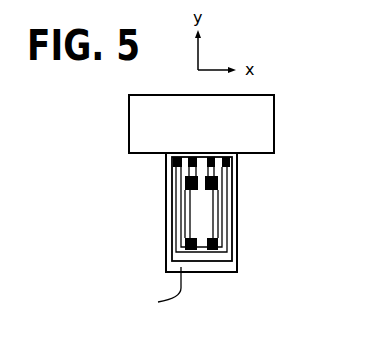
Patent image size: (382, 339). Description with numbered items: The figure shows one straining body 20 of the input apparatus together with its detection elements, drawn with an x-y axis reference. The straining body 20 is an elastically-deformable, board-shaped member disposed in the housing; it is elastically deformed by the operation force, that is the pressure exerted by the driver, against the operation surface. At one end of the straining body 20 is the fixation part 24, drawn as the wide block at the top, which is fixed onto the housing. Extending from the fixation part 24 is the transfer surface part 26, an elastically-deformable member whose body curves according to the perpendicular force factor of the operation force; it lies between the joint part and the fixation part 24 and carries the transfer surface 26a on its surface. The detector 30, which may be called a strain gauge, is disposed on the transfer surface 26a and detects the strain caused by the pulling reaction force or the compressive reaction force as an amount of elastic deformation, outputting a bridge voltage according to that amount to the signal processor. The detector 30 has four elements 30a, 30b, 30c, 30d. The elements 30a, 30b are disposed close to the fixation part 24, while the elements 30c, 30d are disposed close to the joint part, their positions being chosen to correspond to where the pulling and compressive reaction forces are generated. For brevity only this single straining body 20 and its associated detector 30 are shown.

The straining body 20 is at (290, 109).
The fixation part 24 is at (129, 118).
The transfer surface part 26 is at (238, 265).
The transfer surface 26a is at (153, 292).
The detector 30 is at (236, 222).
The element 30a is at (185, 183).
The element 30b is at (218, 181).
The element 30c is at (218, 242).
The element 30d is at (180, 243).